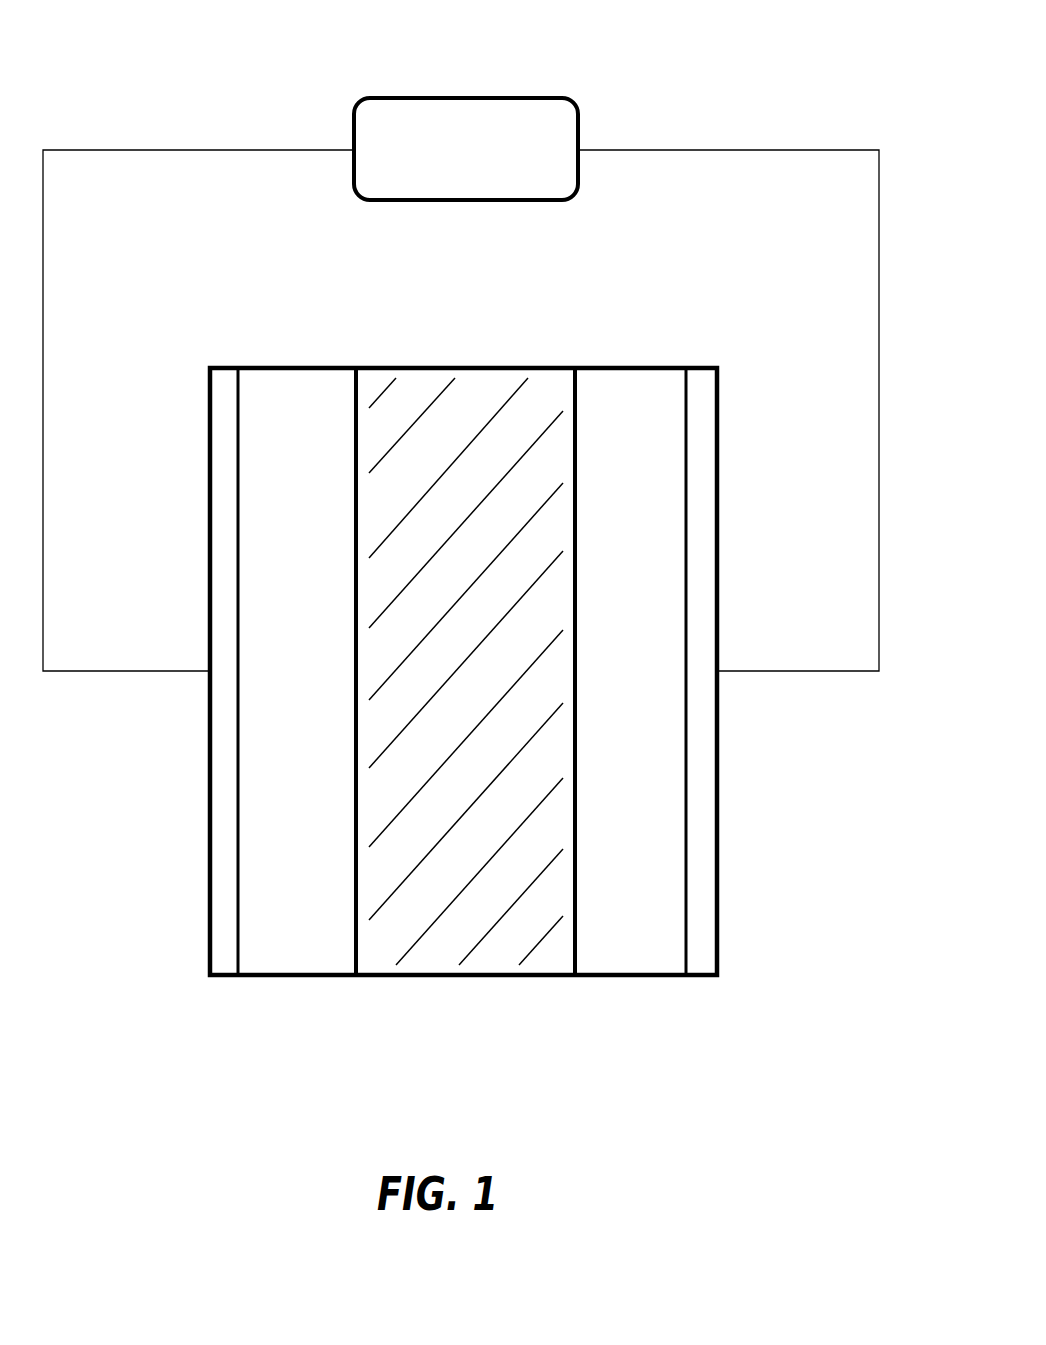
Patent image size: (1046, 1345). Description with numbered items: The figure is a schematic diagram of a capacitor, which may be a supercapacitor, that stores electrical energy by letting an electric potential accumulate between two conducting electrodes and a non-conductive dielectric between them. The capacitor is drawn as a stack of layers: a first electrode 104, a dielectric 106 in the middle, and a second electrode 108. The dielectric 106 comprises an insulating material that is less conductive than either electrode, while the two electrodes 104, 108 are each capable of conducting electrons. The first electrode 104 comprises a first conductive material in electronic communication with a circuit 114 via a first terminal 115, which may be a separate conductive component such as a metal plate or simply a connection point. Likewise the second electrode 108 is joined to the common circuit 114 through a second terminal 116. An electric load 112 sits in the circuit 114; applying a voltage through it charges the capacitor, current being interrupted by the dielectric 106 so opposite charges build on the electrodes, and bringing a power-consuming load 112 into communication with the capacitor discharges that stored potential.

The first electrode 104 is at (286, 942).
The dielectric 106 is at (493, 952).
The second electrode 108 is at (646, 942).
The electric load 112 is at (488, 166).
The circuit 114 is at (822, 122).
The first terminal 115 is at (228, 767).
The second terminal 116 is at (698, 794).